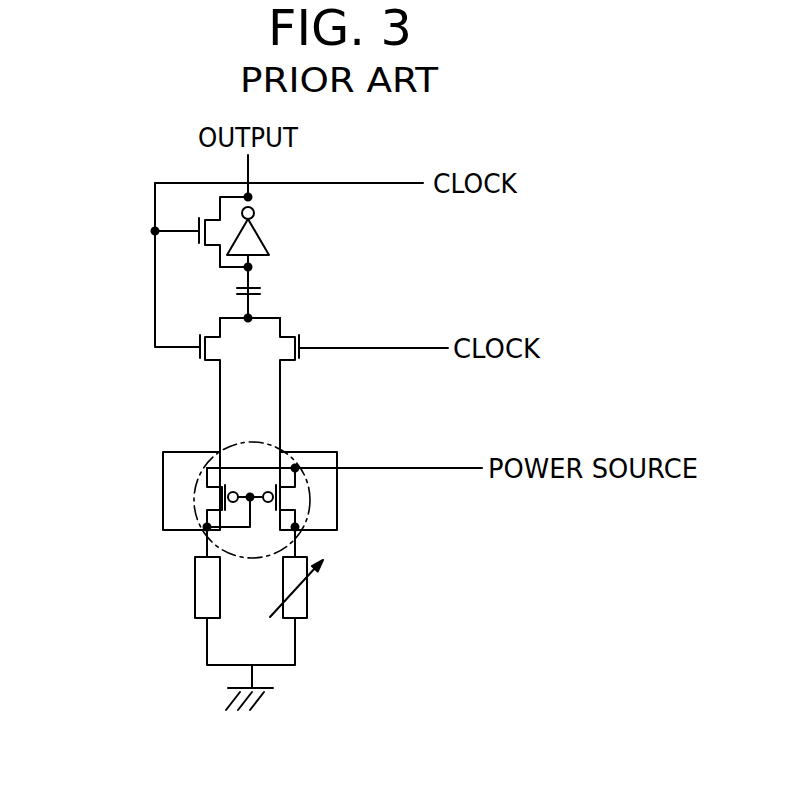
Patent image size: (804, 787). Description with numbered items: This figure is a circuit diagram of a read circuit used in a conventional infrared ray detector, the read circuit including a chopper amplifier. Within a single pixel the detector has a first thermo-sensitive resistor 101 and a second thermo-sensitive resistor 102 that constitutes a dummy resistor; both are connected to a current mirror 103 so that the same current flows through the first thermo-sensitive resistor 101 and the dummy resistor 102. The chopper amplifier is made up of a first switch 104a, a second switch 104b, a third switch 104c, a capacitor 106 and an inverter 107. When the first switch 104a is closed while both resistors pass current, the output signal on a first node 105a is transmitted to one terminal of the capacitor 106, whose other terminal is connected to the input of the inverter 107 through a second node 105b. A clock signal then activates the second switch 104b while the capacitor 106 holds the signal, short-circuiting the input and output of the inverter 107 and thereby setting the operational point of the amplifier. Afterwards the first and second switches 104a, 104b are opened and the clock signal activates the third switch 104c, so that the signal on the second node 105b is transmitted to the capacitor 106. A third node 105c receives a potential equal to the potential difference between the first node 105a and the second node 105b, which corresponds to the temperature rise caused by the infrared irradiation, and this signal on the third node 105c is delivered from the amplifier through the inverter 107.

The first thermo-sensitive resistor 101 is at (307, 602).
The second thermo-sensitive resistor 102 is at (195, 583).
The current mirror 103 is at (187, 483).
The first switch 104a is at (200, 353).
The second switch 104b is at (200, 240).
The third switch 104c is at (299, 353).
The first node 105a is at (163, 510).
The second node 105b is at (250, 267).
The third node 105c is at (337, 507).
The capacitor 106 is at (262, 290).
The inverter 107 is at (263, 240).